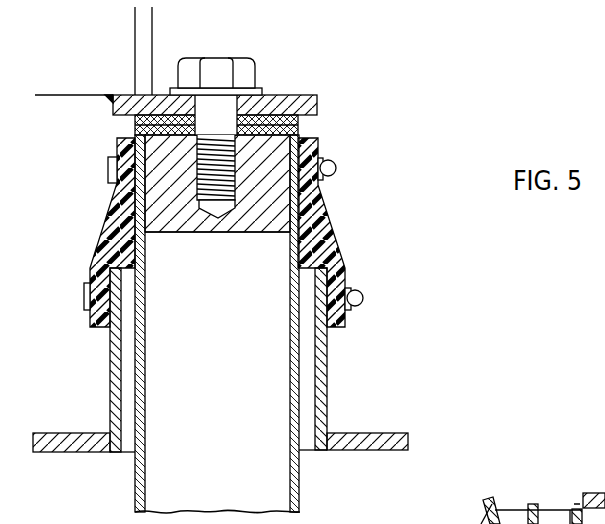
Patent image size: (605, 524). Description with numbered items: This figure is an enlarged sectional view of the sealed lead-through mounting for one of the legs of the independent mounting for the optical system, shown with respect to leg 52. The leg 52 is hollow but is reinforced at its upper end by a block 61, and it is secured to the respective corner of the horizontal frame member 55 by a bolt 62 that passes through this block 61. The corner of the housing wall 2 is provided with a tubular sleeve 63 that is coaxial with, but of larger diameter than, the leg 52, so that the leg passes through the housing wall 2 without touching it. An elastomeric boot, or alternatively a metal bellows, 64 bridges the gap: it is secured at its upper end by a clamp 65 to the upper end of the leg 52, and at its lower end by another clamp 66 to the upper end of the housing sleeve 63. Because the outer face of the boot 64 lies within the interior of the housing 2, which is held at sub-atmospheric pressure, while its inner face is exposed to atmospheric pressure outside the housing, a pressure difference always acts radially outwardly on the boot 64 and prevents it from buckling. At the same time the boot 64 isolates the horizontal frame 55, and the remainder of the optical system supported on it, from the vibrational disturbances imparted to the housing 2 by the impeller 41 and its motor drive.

The housing wall 2 is at (384, 434).
The impeller 41 is at (514, 523).
The leg 52 is at (301, 476).
The horizontal frame member 55 is at (282, 95).
The block 61 is at (298, 137).
The bolt 62 is at (215, 63).
The tubular sleeve 63 is at (327, 384).
The elastomeric boot 64 is at (333, 233).
The clamp 65 is at (337, 166).
The clamp 66 is at (364, 294).